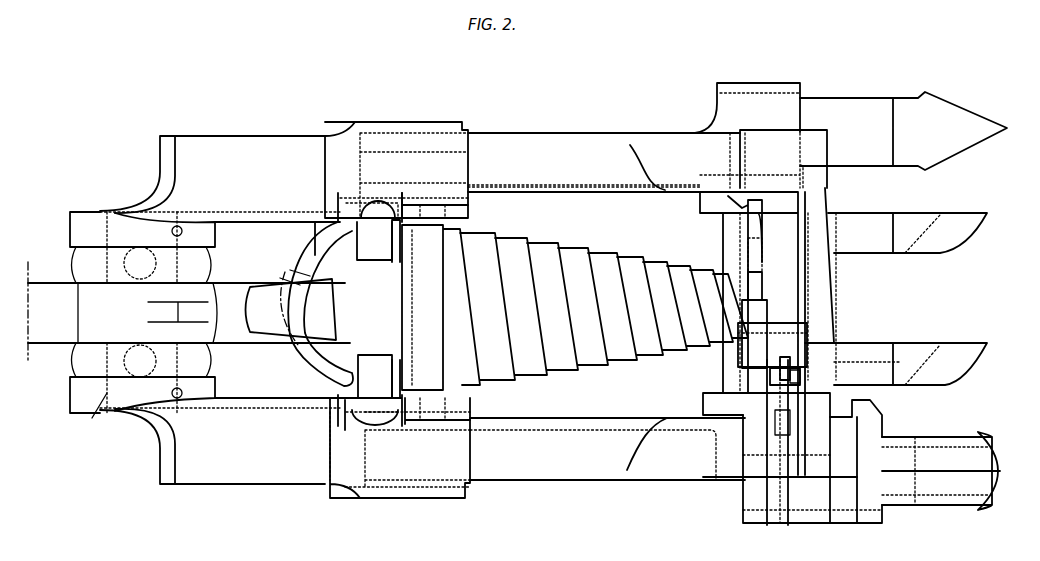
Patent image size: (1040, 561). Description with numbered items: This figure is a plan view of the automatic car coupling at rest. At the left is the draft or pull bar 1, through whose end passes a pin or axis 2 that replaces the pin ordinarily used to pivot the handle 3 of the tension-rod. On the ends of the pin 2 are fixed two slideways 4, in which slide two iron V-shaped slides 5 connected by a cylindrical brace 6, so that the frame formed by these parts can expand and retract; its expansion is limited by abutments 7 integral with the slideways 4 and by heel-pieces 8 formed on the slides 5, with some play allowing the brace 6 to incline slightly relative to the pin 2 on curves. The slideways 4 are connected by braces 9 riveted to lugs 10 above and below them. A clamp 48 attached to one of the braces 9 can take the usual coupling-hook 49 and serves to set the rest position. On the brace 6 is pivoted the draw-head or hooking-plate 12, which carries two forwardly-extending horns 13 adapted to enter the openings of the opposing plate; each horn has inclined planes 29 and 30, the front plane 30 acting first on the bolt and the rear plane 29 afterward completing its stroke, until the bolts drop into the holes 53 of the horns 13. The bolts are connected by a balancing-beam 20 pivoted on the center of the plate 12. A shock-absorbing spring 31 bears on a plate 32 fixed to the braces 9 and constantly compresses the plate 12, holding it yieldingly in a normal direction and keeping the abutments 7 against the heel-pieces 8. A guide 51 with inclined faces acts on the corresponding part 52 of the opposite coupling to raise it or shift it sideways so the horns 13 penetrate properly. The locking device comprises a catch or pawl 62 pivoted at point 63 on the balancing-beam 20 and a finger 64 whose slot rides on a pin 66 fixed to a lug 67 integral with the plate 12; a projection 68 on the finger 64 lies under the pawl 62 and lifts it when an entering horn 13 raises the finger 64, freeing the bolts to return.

The draft or pull bar 1 is at (189, 311).
The pin or axis 2 is at (98, 417).
The handle of the tension-rod 3 is at (205, 312).
The slideways 4 is at (220, 310).
The V-shaped slides 5 is at (606, 306).
The cylindrical brace 6 is at (758, 483).
The abutments 7 is at (445, 122).
The heel-pieces 8 is at (325, 172).
The braces 9 is at (353, 310).
The lugs 10 is at (377, 214).
The draw-head or hooking-plate 12 is at (765, 303).
The horns or projections 13 is at (907, 299).
The balancing-beam 20 is at (755, 345).
The inclined plane of the horn 29 is at (912, 250).
The inclined plane of the horn 30 is at (965, 232).
The spring 31 is at (575, 307).
The plate 32 is at (400, 362).
The clamp 48 is at (290, 357).
The coupling-hook 49 is at (291, 308).
The guide 51 is at (903, 131).
The corresponding part 52 is at (941, 471).
The holes of the horns 53 is at (837, 225).
The catch or pawl 62 is at (763, 500).
The pivot point 63 is at (782, 333).
The finger 64 is at (790, 373).
The pin 66 is at (768, 377).
The lug 67 is at (820, 340).
The projection or heel 68 is at (778, 432).